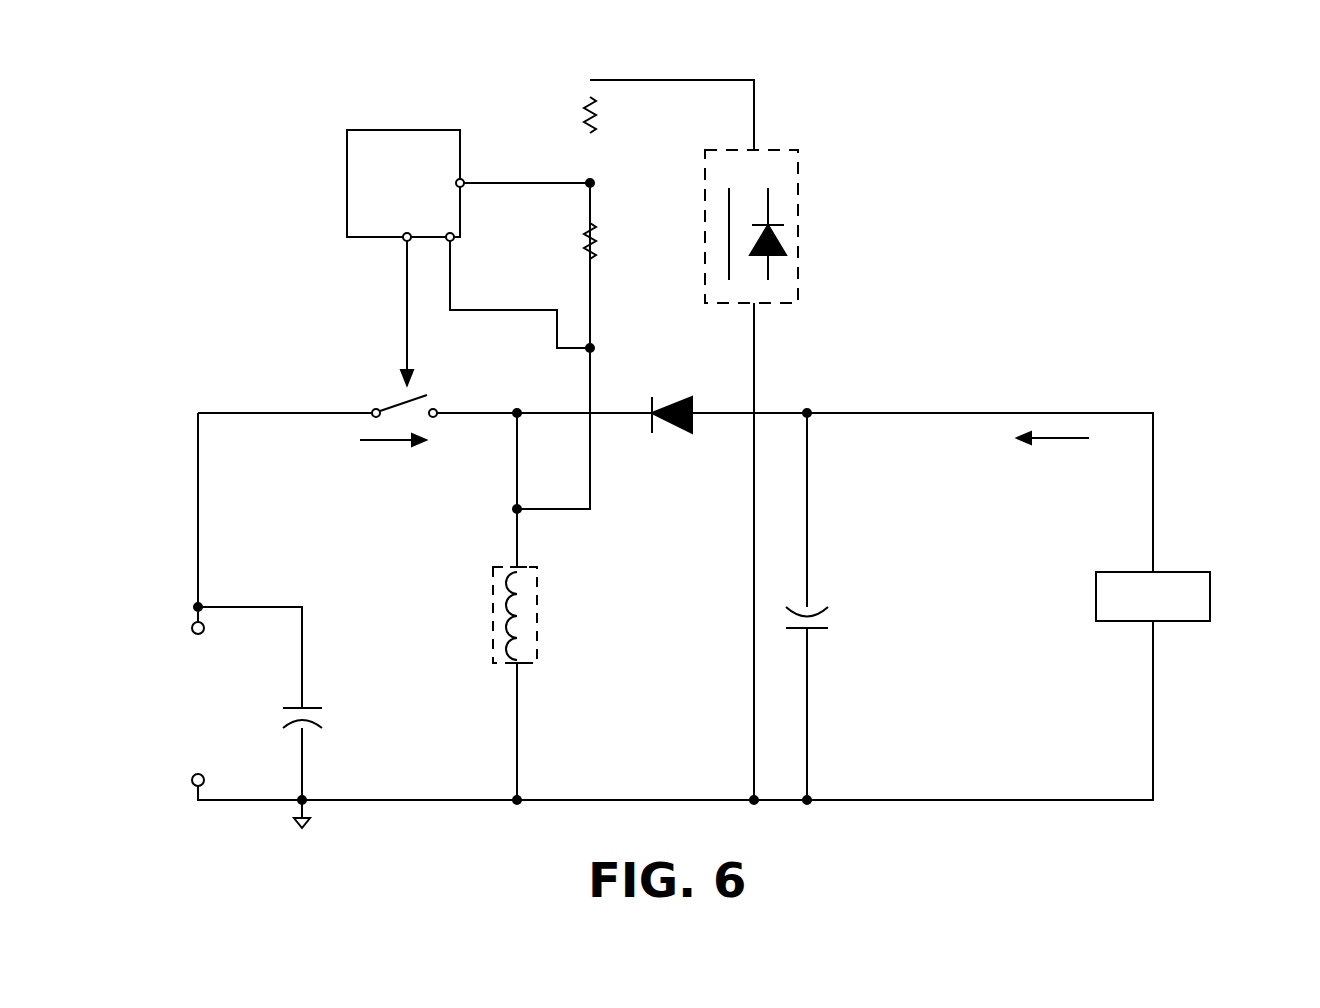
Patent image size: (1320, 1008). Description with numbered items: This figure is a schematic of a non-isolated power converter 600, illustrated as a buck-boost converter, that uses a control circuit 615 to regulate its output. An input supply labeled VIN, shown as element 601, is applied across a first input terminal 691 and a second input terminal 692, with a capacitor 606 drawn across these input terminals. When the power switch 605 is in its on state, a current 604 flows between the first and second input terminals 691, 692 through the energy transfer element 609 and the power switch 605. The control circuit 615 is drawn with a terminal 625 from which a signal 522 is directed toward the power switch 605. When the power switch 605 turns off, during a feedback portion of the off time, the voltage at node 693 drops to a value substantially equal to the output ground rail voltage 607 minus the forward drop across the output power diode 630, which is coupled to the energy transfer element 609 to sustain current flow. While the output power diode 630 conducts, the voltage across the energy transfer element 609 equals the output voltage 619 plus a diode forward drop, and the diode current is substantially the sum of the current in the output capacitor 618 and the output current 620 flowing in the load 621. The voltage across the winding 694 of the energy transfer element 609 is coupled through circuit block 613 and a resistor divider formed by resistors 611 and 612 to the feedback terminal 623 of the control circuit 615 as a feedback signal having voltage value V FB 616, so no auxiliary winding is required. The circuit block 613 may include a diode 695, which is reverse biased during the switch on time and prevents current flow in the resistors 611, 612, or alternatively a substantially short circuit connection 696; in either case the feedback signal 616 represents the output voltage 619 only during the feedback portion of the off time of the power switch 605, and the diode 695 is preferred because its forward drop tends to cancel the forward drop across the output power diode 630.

The non-isolated power converter 600 is at (169, 339).
The input voltage source 601 is at (167, 723).
The current 604 is at (353, 470).
The power switch 605 is at (388, 397).
The input capacitor 606 is at (330, 727).
The output ground rail voltage 607 is at (911, 423).
The energy transfer element 609 is at (523, 567).
The resistor 611 is at (593, 85).
The resistor 612 is at (603, 237).
The circuit block 613 is at (810, 182).
The control circuit 615 is at (389, 128).
The feedback signal voltage value 616 is at (493, 230).
The output capacitor 618 is at (854, 581).
The output voltage 619 is at (967, 617).
The output current 620 is at (1056, 475).
The load 621 is at (1212, 600).
The feedback terminal 623 is at (465, 175).
The control terminal 625 is at (400, 242).
The output power diode 630 is at (672, 432).
The first input terminal 691 is at (180, 627).
The second input terminal 692 is at (180, 798).
The node 693 is at (508, 427).
The winding 694 is at (525, 615).
The diode 695 is at (792, 235).
The substantially short circuit connection 696 is at (722, 265).
The drive signal 522 is at (413, 303).